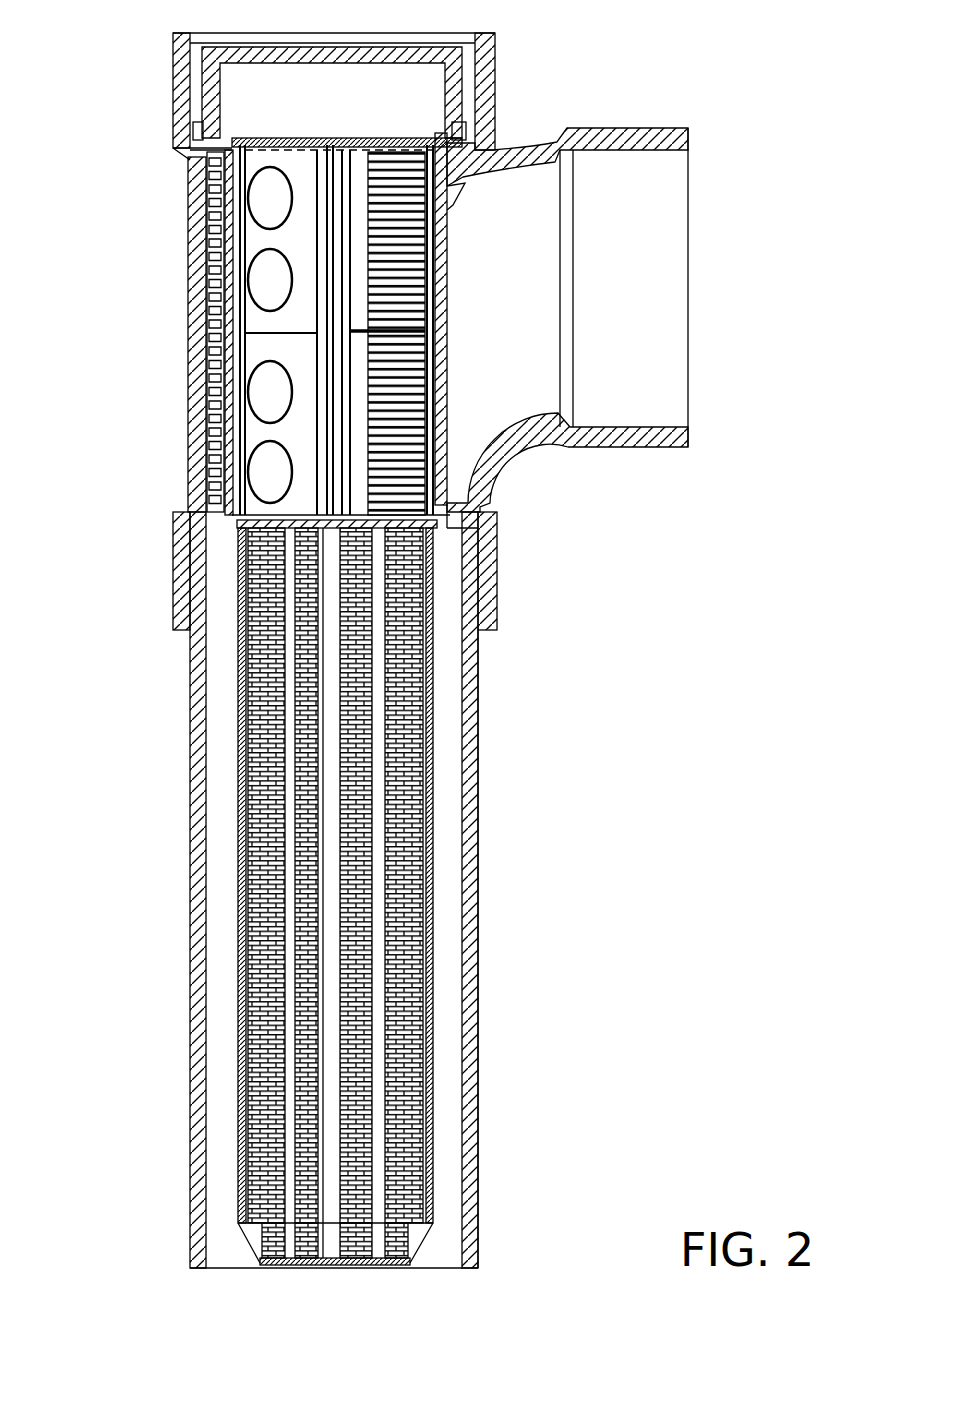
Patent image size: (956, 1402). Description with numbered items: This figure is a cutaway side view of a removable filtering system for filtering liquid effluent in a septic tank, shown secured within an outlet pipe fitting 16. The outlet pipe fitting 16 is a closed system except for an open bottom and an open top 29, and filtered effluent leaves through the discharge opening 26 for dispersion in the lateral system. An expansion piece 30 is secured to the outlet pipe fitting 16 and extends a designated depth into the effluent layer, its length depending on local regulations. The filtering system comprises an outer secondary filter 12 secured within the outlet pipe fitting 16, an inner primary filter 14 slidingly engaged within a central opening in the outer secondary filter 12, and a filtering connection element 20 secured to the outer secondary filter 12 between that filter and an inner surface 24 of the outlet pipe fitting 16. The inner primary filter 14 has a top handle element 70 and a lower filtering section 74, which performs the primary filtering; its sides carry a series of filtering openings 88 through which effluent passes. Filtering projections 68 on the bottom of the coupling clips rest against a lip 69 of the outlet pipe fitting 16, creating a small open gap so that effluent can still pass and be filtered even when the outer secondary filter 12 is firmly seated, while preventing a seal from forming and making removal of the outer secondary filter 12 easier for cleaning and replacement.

The outer secondary filter 12 is at (212, 428).
The inner primary filter 14 is at (238, 693).
The outlet pipe fitting 16 is at (652, 128).
The filtering connection element 20 is at (440, 541).
The inner surface 24 is at (446, 768).
The discharge opening 26 is at (630, 290).
The top 29 is at (462, 30).
The expansion piece 30 is at (470, 1058).
The filtering projections 68 is at (183, 155).
The lip 69 is at (188, 172).
The top handle element 70 is at (205, 97).
The lower filtering section 74 is at (432, 962).
The filtering openings 88 is at (410, 1145).